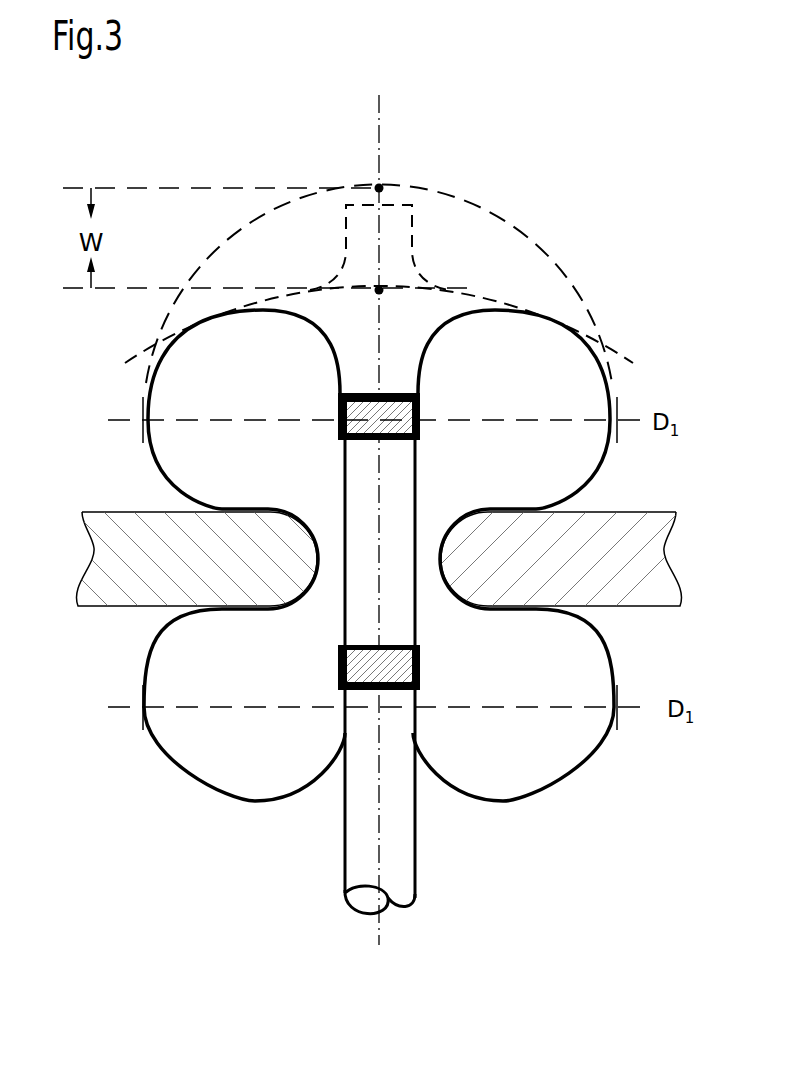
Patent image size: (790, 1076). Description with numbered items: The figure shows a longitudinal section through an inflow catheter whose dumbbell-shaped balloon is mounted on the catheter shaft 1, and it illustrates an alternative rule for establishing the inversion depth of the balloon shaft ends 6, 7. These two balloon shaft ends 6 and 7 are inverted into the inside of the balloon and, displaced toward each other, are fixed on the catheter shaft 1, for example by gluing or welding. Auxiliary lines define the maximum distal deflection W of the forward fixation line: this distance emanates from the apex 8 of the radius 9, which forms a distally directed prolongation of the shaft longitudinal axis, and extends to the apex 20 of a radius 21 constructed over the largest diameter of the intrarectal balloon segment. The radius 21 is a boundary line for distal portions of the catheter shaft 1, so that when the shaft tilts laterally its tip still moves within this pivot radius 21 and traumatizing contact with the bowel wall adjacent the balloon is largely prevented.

The catheter shaft 1 is at (390, 850).
The balloon shaft end 6 is at (392, 428).
The balloon shaft end 7 is at (400, 663).
The apex of the radius 8 is at (379, 290).
The radius 9 is at (613, 350).
The apex of a radius 20 is at (379, 188).
The radius 21 is at (502, 221).